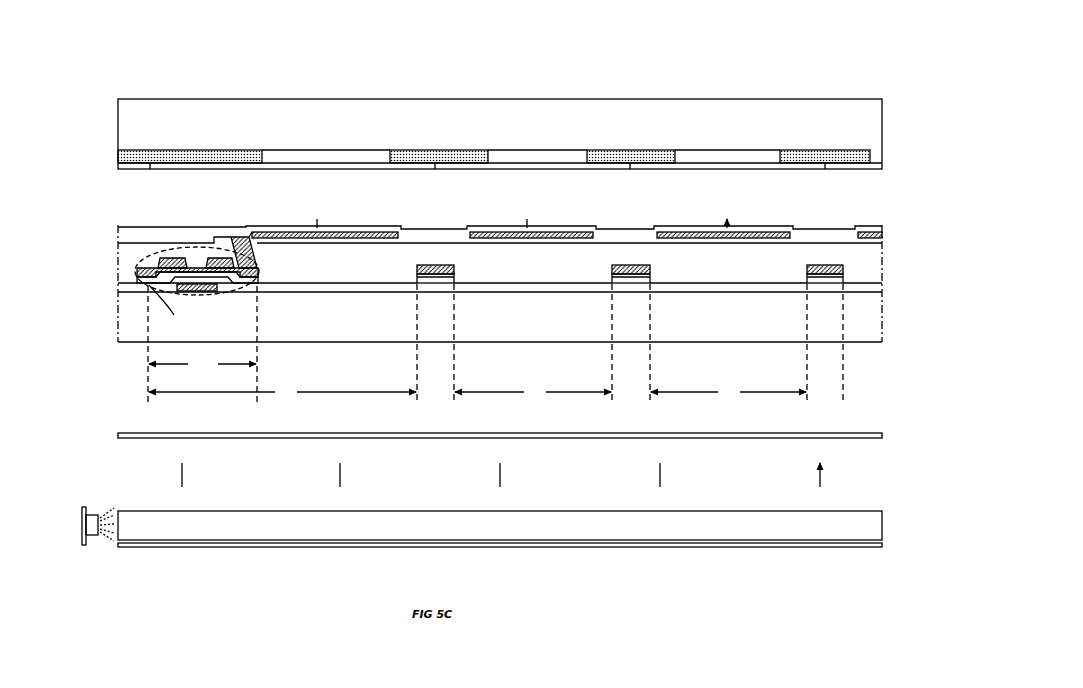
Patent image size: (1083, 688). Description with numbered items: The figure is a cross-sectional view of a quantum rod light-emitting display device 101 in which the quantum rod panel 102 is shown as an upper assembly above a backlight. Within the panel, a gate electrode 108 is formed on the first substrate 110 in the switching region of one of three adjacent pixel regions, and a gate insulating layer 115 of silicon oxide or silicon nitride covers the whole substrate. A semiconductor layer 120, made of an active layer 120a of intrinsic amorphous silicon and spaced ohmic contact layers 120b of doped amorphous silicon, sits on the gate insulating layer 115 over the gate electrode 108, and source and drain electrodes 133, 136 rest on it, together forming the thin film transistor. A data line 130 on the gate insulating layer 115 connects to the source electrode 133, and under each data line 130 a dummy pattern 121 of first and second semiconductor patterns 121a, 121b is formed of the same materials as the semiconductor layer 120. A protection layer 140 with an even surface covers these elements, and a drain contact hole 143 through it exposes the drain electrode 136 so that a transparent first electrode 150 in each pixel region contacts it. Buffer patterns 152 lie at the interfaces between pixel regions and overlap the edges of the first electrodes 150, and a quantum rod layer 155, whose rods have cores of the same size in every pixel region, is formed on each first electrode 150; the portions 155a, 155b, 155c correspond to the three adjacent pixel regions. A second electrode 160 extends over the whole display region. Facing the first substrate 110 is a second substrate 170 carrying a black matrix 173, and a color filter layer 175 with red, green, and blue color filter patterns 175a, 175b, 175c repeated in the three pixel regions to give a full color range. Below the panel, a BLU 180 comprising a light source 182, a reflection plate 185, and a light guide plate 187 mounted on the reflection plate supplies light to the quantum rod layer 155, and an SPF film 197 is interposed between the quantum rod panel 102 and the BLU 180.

The quantum rod light-emitting display device 101 is at (847, 58).
The quantum rod panel 102 is at (103, 340).
The gate electrode 108 is at (195, 292).
The first substrate 110 is at (878, 338).
The gate insulating layer 115 is at (333, 288).
The semiconductor layer 120 is at (259, 319).
The active layer 120a is at (232, 280).
The ohmic contact layers 120b is at (253, 283).
The dummy pattern 121 is at (457, 319).
The first semiconductor pattern 121a is at (433, 279).
The second semiconductor pattern 121b is at (445, 274).
The data line 130 is at (441, 266).
The source electrode 133 is at (172, 258).
The drain electrode 136 is at (213, 258).
The protection layer 140 is at (360, 279).
The drain contact hole 143 is at (239, 244).
The first electrode 150 is at (546, 238).
The buffer pattern 152 is at (644, 261).
The quantum rod layer 155 is at (583, 50).
The quantum rod layer in red pixel region 155a is at (378, 232).
The quantum rod layer in green pixel region 155b is at (563, 232).
The quantum rod layer in blue pixel region 155c is at (691, 232).
The second electrode 160 is at (577, 231).
The second substrate 170 is at (873, 133).
The black matrix 173 is at (192, 153).
The color filter layer 175 is at (363, 55).
The red color filter pattern 175a is at (378, 155).
The green color filter pattern 175b is at (507, 160).
The blue color filter pattern 175c is at (705, 158).
The BLU 180 is at (80, 503).
The light source 182 is at (93, 535).
The reflection plate 185 is at (287, 548).
The light guide plate 187 is at (335, 528).
The SPF film 197 is at (203, 433).